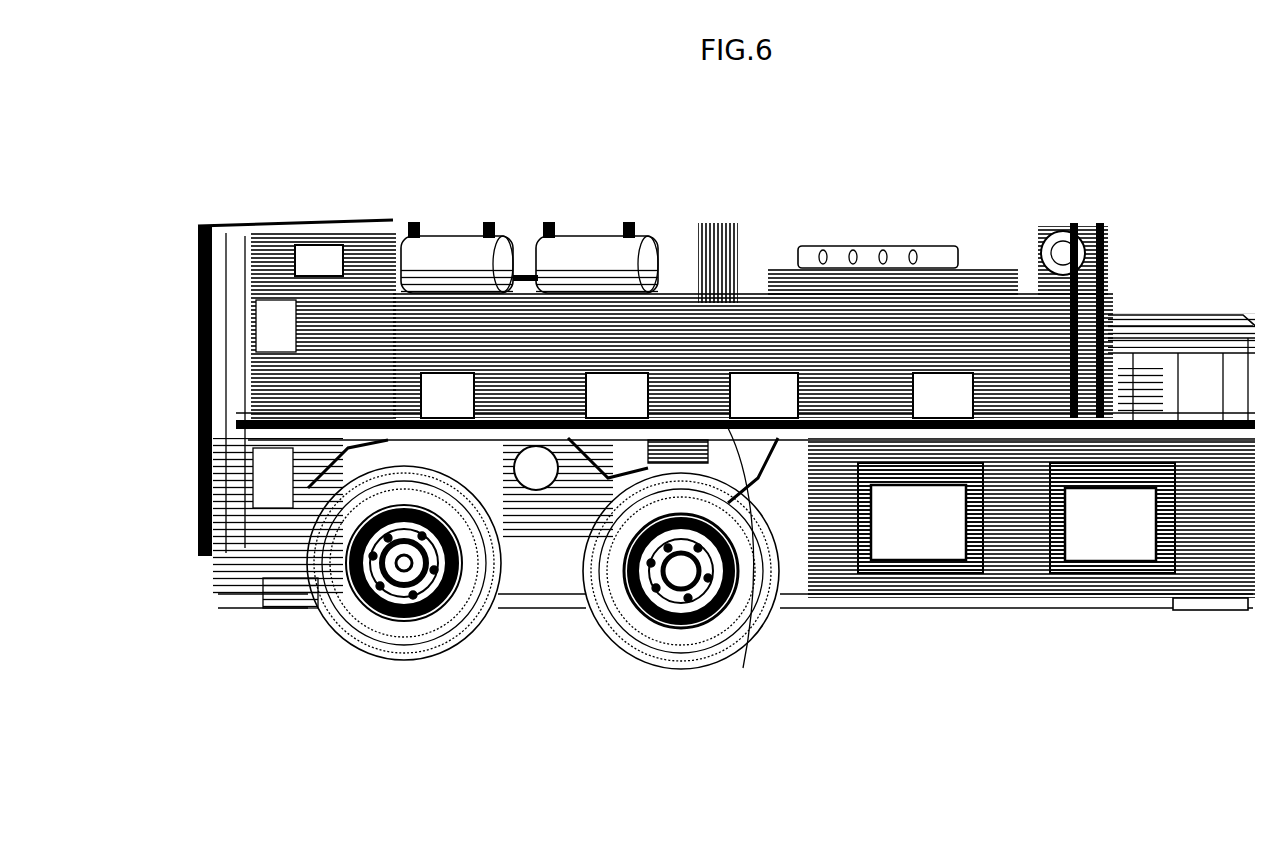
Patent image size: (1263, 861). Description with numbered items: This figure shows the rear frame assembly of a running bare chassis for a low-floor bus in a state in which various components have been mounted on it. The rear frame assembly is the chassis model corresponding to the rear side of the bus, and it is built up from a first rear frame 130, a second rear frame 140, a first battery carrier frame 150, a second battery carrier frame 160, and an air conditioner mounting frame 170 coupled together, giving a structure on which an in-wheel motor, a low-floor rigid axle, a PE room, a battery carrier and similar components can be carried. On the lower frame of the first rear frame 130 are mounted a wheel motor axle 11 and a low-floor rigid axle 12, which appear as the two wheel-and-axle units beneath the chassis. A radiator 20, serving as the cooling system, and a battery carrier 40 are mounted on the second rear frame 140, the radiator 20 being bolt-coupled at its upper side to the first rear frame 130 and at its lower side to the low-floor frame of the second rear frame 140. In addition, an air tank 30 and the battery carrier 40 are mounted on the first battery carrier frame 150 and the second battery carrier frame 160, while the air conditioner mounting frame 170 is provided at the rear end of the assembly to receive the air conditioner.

The wheel motor axle 11 is at (365, 600).
The low-floor rigid axle 12 is at (623, 607).
The radiator 20 is at (910, 530).
The air tank 30 is at (450, 236).
The battery carrier 40 is at (1130, 310).
The first rear frame 130 is at (268, 598).
The second rear frame 140 is at (1167, 620).
The first battery carrier frame 150 is at (232, 430).
The second battery carrier frame 160 is at (745, 620).
The air conditioner mounting frame 170 is at (1170, 302).